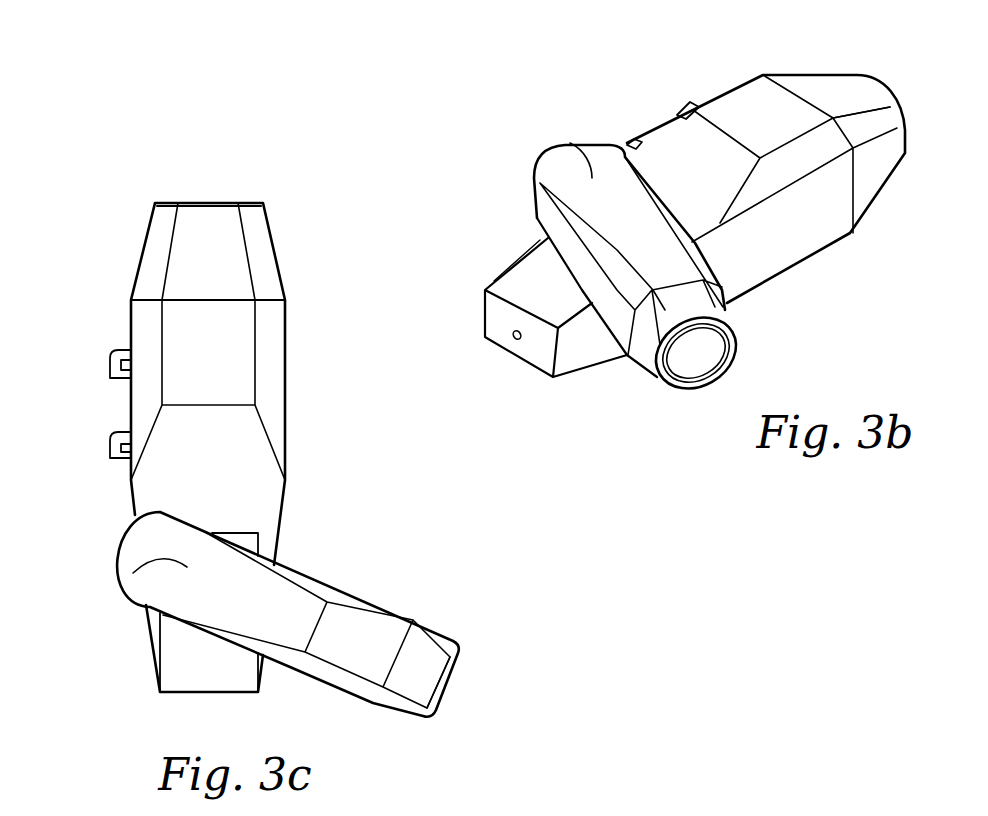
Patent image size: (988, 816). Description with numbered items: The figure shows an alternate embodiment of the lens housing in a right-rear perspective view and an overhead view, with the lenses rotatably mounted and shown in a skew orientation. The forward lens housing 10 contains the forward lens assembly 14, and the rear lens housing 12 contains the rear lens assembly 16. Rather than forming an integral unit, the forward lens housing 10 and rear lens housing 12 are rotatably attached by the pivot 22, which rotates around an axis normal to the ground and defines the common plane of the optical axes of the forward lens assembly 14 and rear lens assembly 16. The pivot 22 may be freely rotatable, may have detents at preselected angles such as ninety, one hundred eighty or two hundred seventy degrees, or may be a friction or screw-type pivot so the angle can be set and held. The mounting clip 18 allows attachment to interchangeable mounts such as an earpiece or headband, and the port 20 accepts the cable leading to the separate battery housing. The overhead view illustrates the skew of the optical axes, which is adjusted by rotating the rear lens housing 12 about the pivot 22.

In FIG. 3C, the forward lens housing 10 is at (287, 440).
In FIG. 3B, the forward lens housing 10 is at (790, 270).
In FIG. 3C, the rear lens housing 12 is at (372, 600).
In FIG. 3B, the rear lens housing 12 is at (535, 208).
In FIG. 3C, the forward lens assembly 14 is at (213, 200).
In FIG. 3B, the forward lens assembly 14 is at (900, 112).
In FIG. 3C, the rear lens assembly 16 is at (447, 688).
In FIG. 3B, the rear lens assembly 16 is at (688, 372).
In FIG. 3C, the mounting clip 18 is at (108, 366).
In FIG. 3B, the mounting clip 18 is at (681, 104).
In FIG. 3C, the port 20 is at (200, 692).
In FIG. 3B, the port 20 is at (512, 340).
In FIG. 3C, the pivot 22 is at (133, 573).
In FIG. 3B, the pivot 22 is at (570, 143).